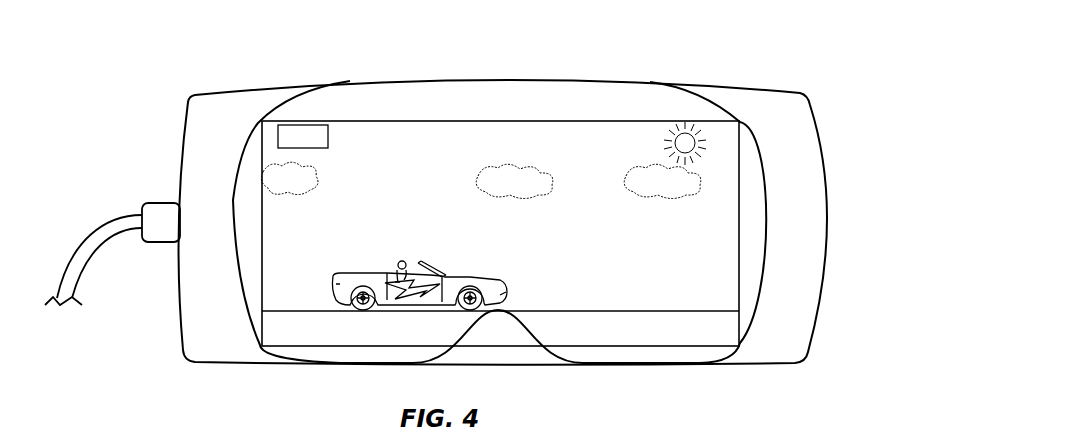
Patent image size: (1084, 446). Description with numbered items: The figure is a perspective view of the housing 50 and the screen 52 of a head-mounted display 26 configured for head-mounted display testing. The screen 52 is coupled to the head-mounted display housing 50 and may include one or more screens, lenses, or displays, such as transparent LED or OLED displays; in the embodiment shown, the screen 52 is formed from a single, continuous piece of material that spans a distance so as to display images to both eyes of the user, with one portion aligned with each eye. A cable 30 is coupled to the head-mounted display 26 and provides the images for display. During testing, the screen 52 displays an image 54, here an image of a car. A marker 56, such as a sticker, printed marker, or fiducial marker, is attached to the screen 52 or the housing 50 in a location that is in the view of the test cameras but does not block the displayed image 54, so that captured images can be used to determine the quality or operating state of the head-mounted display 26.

The head-mounted display 26 is at (647, 43).
The cable 30 is at (103, 222).
The housing 50 is at (503, 80).
The screen 52 is at (500, 120).
The image 54 is at (465, 274).
The marker 56 is at (329, 136).